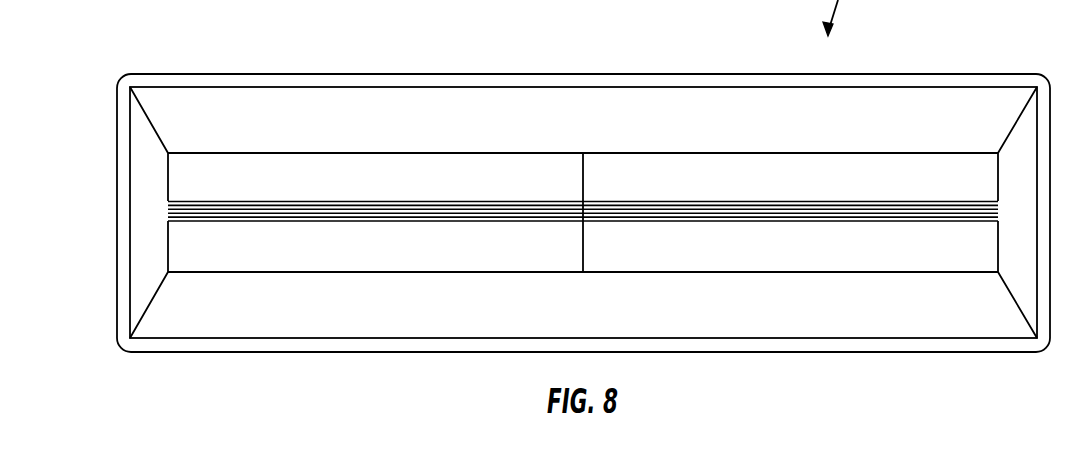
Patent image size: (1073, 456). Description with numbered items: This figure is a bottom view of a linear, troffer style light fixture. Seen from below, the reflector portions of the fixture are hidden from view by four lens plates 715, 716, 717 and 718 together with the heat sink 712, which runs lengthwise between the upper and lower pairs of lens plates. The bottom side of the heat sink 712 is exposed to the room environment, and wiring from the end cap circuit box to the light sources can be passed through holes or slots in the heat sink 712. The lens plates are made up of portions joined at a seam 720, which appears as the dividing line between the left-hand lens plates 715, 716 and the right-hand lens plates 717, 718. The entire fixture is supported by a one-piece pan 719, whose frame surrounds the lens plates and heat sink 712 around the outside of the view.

The heat sink 712 is at (204, 218).
The lens plate 715 is at (235, 178).
The lens plate 716 is at (325, 248).
The lens plate 717 is at (893, 175).
The lens plate 718 is at (832, 247).
The one-piece pan 719 is at (952, 310).
The seam 720 is at (583, 171).